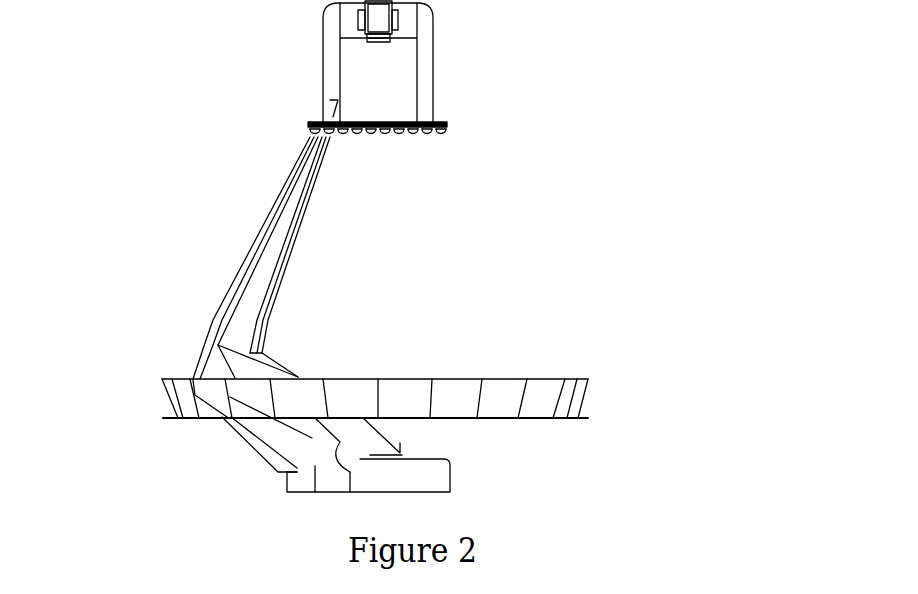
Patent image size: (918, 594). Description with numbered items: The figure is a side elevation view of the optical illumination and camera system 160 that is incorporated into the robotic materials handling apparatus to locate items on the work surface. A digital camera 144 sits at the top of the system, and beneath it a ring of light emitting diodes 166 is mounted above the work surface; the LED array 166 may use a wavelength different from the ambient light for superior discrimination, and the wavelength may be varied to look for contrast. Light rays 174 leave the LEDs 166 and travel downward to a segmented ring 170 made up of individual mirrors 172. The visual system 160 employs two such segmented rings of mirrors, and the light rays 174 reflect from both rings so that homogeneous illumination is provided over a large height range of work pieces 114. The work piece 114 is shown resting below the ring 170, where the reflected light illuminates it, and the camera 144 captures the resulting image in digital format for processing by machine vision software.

The optical illumination and camera system 160 is at (142, 118).
The digital camera 144 is at (459, 14).
The ring of light emitting diodes 166 is at (464, 129).
The light rays 174 is at (231, 279).
The segmented ring 170 is at (524, 348).
The mirror 172 is at (338, 361).
The work piece 114 is at (465, 476).